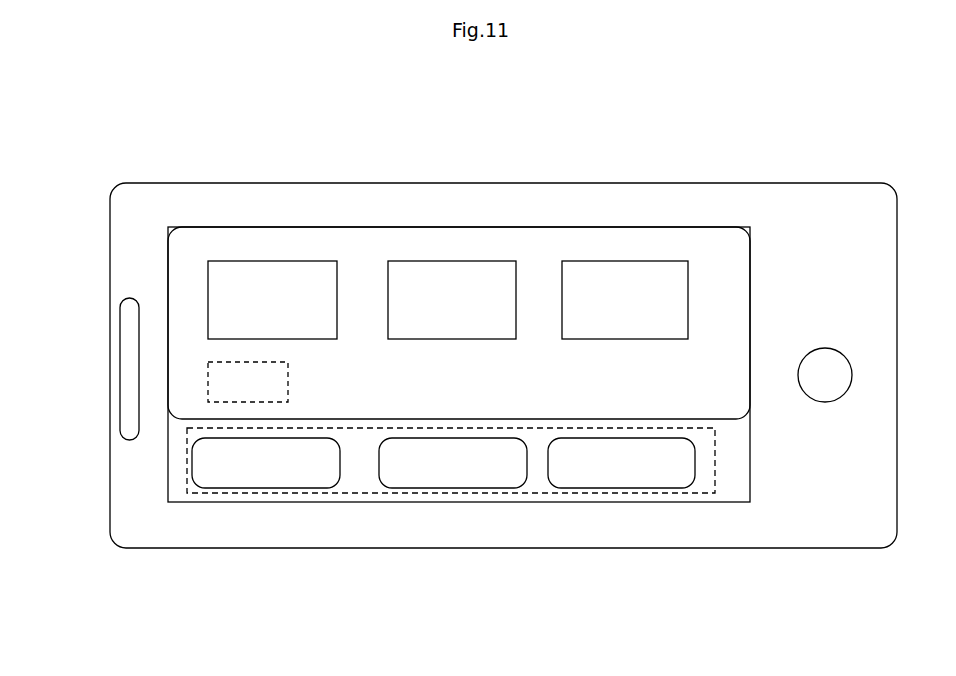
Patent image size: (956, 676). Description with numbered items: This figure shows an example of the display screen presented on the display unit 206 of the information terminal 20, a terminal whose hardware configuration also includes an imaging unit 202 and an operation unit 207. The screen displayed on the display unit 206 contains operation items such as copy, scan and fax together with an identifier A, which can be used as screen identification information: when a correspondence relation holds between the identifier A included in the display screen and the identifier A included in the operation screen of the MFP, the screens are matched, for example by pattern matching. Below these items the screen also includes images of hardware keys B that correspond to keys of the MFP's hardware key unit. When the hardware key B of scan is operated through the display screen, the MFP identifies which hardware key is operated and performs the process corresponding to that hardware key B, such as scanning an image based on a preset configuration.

The information terminal 20 is at (600, 168).
The imaging unit 202 is at (110, 223).
The display unit 206 is at (732, 485).
The operation unit 207 is at (546, 541).
The identifier A is at (207, 383).
The hardware key B is at (450, 493).